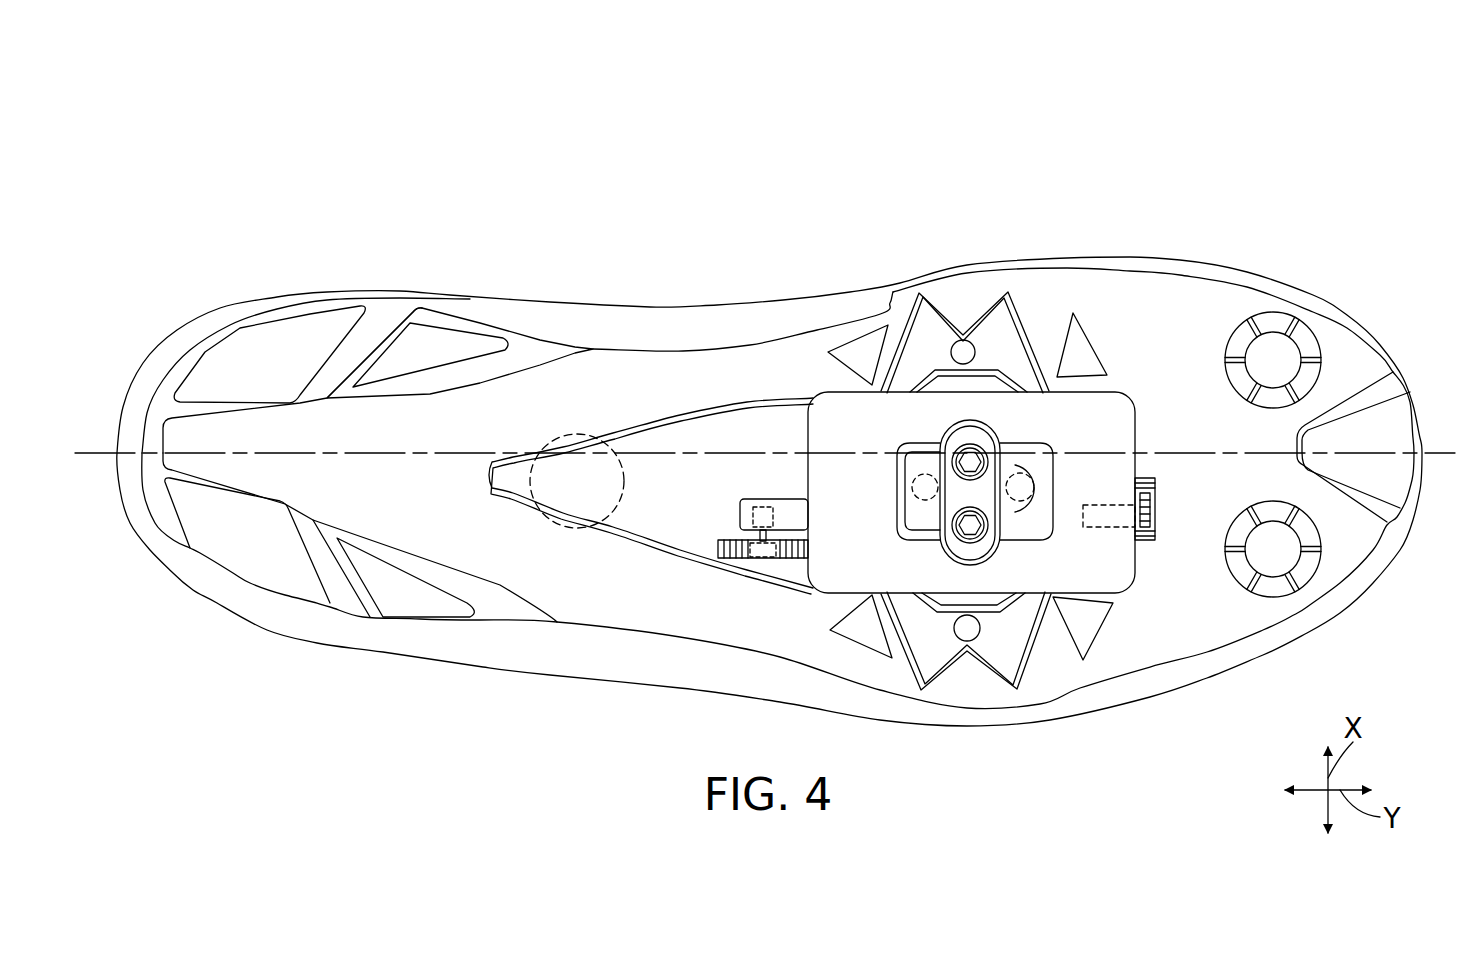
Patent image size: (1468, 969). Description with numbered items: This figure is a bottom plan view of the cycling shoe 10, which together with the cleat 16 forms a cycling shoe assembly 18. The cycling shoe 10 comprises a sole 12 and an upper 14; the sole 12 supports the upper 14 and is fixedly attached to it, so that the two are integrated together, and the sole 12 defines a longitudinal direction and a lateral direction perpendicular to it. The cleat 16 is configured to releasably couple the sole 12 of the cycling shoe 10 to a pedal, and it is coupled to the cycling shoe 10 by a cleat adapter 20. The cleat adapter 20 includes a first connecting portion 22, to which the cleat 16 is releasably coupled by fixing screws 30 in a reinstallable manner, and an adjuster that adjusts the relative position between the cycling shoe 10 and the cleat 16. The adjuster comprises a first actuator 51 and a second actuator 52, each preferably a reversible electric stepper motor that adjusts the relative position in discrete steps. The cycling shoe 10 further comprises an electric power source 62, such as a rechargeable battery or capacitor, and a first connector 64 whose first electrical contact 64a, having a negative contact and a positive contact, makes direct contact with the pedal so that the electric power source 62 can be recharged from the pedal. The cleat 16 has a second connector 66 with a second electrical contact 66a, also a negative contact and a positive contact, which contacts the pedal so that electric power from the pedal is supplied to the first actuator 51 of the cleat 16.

The cycling shoe 10 is at (1352, 302).
The sole 12 is at (1152, 678).
The upper 14 is at (687, 302).
The cleat 16 is at (892, 494).
The cycling shoe assembly 18 is at (1258, 148).
The cleat adapter 20 is at (1150, 388).
The first connecting portion 22 is at (1123, 392).
The fixing screws 30 is at (958, 438).
The first actuator 51 is at (760, 496).
The second actuator 52 is at (1118, 536).
The electric power source 62 is at (578, 530).
The first connector 64 is at (946, 348).
The first electrical contact 64a is at (964, 352).
The second connector 66 is at (900, 503).
The second electrical contact 66a is at (905, 483).